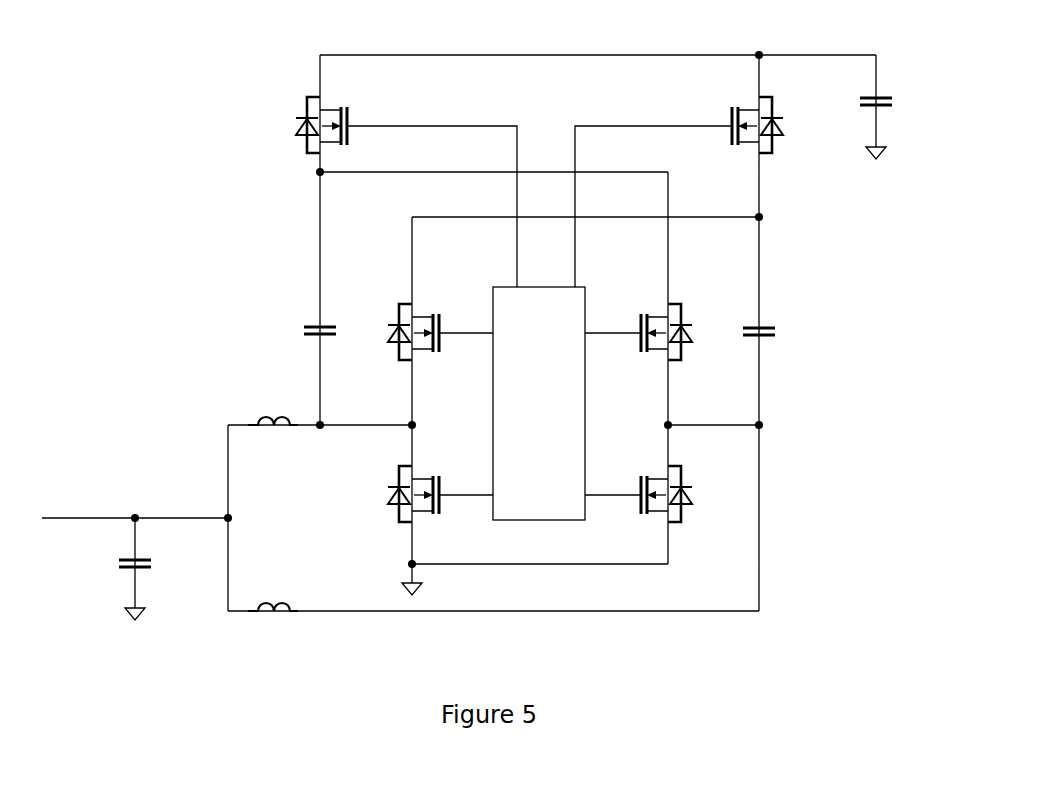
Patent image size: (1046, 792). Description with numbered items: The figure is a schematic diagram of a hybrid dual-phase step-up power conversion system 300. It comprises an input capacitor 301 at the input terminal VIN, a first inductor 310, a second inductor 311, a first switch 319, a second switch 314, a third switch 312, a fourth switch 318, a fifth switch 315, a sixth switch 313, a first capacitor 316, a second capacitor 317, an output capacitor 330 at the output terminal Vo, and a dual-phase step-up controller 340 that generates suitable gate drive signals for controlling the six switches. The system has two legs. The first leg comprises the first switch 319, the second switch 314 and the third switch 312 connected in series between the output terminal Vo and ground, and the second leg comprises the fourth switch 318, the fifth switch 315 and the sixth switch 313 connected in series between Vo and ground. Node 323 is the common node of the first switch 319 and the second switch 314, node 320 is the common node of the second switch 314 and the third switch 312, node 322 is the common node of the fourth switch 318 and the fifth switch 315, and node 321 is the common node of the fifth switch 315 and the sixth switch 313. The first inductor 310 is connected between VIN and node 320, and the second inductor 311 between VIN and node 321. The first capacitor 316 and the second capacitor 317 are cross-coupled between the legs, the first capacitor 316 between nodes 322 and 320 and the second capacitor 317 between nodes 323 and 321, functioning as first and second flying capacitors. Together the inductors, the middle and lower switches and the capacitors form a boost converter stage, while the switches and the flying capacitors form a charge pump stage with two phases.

The hybrid dual-phase step-up power conversion system 300 is at (176, 48).
The input capacitor 301 is at (115, 570).
The first inductor 310 is at (258, 418).
The second inductor 311 is at (268, 620).
The third switch 312 is at (388, 498).
The sixth switch 313 is at (690, 488).
The second switch 314 is at (400, 365).
The fifth switch 315 is at (690, 350).
The first capacitor 316 is at (310, 325).
The second capacitor 317 is at (780, 340).
The fourth switch 318 is at (297, 118).
The first switch 319 is at (782, 150).
The node 320 is at (424, 432).
The node 321 is at (660, 433).
The node 322 is at (310, 177).
The node 323 is at (770, 228).
The output capacitor 330 is at (898, 107).
The dual-phase step-up controller 340 is at (497, 285).